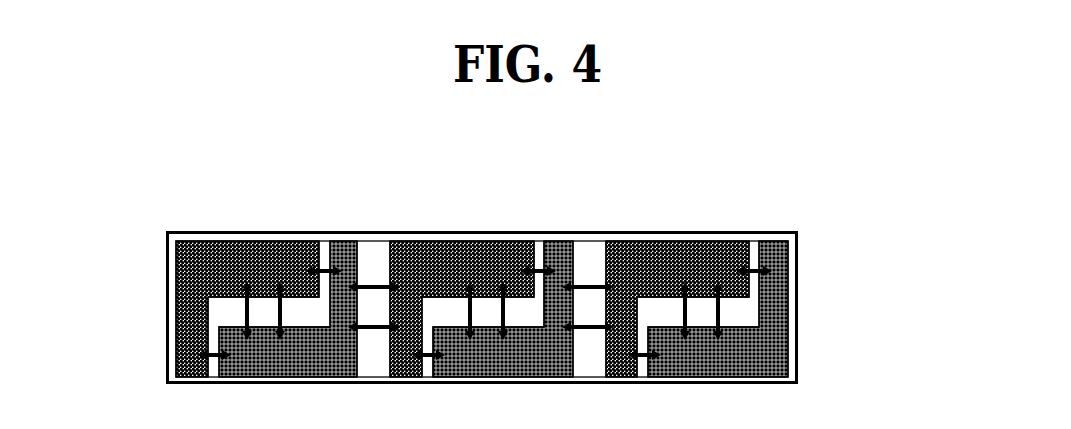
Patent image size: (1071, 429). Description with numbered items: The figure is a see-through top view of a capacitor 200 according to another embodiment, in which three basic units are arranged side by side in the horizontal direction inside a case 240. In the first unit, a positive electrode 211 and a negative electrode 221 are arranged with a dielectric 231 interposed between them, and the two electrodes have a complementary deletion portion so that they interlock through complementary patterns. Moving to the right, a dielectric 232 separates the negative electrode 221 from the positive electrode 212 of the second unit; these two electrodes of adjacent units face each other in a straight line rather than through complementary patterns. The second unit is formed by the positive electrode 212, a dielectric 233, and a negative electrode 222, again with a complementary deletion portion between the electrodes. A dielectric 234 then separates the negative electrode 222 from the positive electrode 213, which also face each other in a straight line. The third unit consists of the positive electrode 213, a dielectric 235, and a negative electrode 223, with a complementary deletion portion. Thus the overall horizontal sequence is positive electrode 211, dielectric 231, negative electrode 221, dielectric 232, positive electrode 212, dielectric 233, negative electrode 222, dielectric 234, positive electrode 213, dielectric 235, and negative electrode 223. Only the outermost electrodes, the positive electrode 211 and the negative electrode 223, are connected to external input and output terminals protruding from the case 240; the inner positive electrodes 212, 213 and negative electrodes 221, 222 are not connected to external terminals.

The capacitor 200 is at (98, 160).
The positive electrode 211 is at (224, 242).
The positive electrode 212 is at (438, 243).
The positive electrode 213 is at (650, 242).
The negative electrode 221 is at (338, 243).
The negative electrode 222 is at (557, 243).
The negative electrode 223 is at (770, 243).
The dielectric 231 is at (325, 244).
The dielectric 232 is at (380, 243).
The dielectric 233 is at (545, 244).
The dielectric 234 is at (597, 243).
The dielectric 235 is at (755, 244).
The case 240 is at (798, 353).